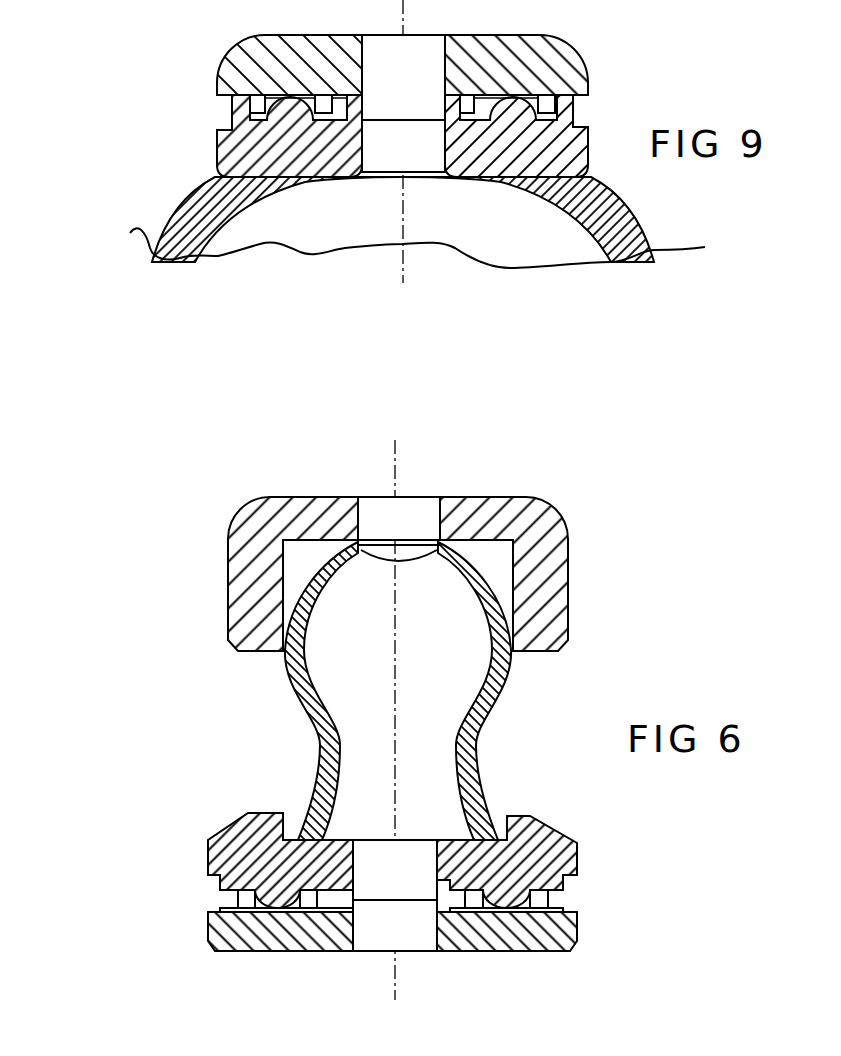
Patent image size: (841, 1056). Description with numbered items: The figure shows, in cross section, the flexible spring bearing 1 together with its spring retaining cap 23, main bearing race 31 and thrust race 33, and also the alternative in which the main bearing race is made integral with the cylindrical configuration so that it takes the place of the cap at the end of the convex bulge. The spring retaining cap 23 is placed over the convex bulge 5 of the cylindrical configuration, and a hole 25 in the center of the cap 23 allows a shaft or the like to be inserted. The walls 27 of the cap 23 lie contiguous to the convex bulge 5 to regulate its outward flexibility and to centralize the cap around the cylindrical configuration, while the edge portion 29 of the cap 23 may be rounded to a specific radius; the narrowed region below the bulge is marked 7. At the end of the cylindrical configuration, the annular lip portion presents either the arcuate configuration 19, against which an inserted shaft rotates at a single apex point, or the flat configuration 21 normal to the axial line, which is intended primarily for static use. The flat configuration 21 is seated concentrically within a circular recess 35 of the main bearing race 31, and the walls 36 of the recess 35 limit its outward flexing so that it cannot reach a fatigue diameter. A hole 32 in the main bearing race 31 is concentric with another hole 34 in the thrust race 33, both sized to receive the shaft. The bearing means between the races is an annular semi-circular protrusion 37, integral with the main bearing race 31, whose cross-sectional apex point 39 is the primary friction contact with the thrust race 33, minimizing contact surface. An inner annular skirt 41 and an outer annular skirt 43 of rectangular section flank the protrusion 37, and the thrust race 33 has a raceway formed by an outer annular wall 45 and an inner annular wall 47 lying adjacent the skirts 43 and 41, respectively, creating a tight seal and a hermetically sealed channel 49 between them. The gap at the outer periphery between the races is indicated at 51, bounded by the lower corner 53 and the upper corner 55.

In FIG. 6, the flexible spring bearing 1 is at (600, 455).
In FIG. 9, the convex bulge 5 is at (132, 236).
In FIG. 6, the convex bulge 5 is at (316, 615).
In FIG. 6, the neck portion 7 is at (318, 733).
In FIG. 6, the arcuate configuration 19 is at (436, 555).
In FIG. 6, the flat configuration 21 is at (515, 503).
In FIG. 6, the spring retaining cap 23 is at (570, 592).
In FIG. 6, the hole 25 is at (418, 510).
In FIG. 6, the walls 27 is at (305, 540).
In FIG. 6, the edge portion 29 is at (243, 510).
In FIG. 9, the main bearing race 31 is at (215, 160).
In FIG. 6, the main bearing race 31 is at (246, 813).
In FIG. 9, the hole 32 is at (356, 176).
In FIG. 6, the hole 32 is at (372, 838).
In FIG. 9, the thrust race 33 is at (520, 34).
In FIG. 6, the thrust race 33 is at (579, 928).
In FIG. 9, the hole 34 is at (430, 52).
In FIG. 6, the hole 34 is at (420, 955).
In FIG. 6, the circular recess 35 is at (413, 838).
In FIG. 6, the walls 36 is at (252, 812).
In FIG. 6, the annular semi-circular protrusion 37 is at (240, 955).
In FIG. 6, the cross-sectional apex point 39 is at (298, 925).
In FIG. 9, the inner annular skirt 41 is at (460, 98).
In FIG. 6, the inner annular skirt 41 is at (342, 897).
In FIG. 9, the outer annular skirt 43 is at (232, 100).
In FIG. 6, the outer annular skirt 43 is at (219, 909).
In FIG. 9, the outer annular wall 45 is at (232, 109).
In FIG. 6, the outer annular wall 45 is at (238, 900).
In FIG. 9, the inner annular wall 47 is at (446, 120).
In FIG. 6, the inner annular wall 47 is at (440, 900).
In FIG. 9, the hermetically sealed channel 49 is at (280, 112).
In FIG. 6, the hermetically sealed channel 49 is at (290, 900).
In FIG. 9, the gap 51 is at (604, 118).
In FIG. 6, the gap 51 is at (180, 878).
In FIG. 9, the groove 53 is at (591, 124).
In FIG. 6, the groove 53 is at (206, 876).
In FIG. 9, the notch 55 is at (218, 127).
In FIG. 6, the notch 55 is at (578, 876).